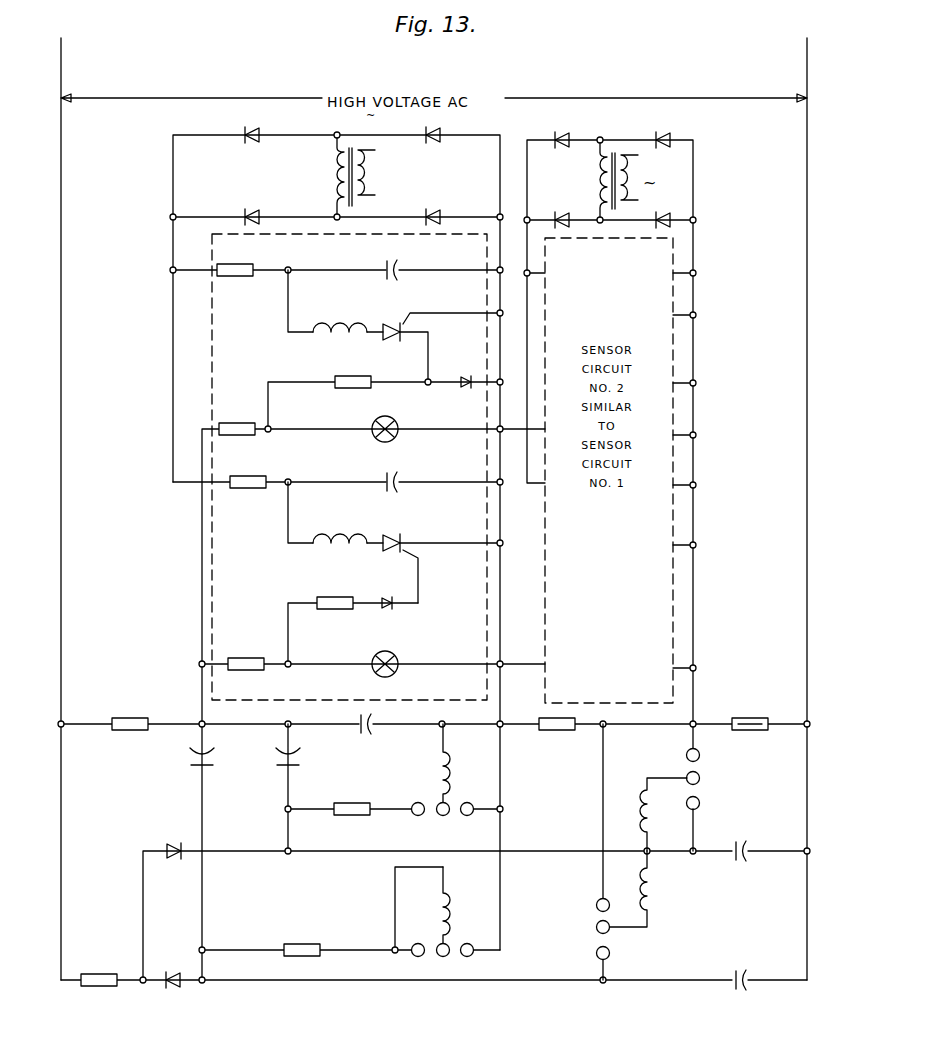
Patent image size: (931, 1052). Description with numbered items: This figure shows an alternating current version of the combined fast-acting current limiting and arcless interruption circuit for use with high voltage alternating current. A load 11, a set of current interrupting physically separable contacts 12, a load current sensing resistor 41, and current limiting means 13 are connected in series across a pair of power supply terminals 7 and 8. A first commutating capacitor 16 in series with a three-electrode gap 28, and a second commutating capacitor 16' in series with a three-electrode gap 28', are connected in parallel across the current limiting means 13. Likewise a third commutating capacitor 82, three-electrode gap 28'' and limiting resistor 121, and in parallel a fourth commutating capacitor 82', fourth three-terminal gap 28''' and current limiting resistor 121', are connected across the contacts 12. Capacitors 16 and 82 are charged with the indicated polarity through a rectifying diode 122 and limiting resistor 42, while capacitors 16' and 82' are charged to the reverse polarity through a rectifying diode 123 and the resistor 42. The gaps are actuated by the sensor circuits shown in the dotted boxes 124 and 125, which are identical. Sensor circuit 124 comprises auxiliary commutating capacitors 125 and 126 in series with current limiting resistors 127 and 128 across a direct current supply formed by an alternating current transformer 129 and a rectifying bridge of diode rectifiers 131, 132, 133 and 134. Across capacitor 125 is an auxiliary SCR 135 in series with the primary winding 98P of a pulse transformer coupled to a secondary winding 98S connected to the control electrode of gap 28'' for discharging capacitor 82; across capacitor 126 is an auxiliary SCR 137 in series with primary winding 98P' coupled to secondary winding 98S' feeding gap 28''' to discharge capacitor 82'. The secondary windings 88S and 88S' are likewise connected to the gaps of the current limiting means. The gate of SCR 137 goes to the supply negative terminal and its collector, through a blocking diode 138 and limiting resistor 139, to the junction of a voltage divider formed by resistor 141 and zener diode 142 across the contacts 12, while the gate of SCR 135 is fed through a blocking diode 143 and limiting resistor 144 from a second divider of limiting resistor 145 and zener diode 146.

The power supply terminal 7 is at (61, 135).
The power supply terminal 8 is at (807, 142).
The load 11 is at (128, 718).
The set of current interrupting physically separable contacts 12 is at (372, 720).
The current limiting means 13 is at (749, 718).
The first commutating capacitor 16 is at (752, 847).
The second commutating capacitor 16' is at (730, 985).
The three-electrode gap 28 is at (707, 800).
The three-electrode gap 28' is at (619, 852).
The three-electrode gap 28'' is at (451, 824).
The fourth three-terminal gap 28''' is at (461, 962).
The load current sensing resistor 41 is at (562, 729).
The limiting resistor 42 is at (102, 986).
The third commutating capacitor 82 is at (295, 787).
The fourth commutating capacitor 82' is at (212, 765).
The secondary winding 88S is at (663, 814).
The secondary winding 88S' is at (651, 889).
The primary winding of pulse transformer 98P is at (340, 523).
The primary winding 98P' is at (340, 312).
The secondary winding 98S is at (463, 763).
The secondary winding 98S' is at (465, 905).
The limiting resistor 121 is at (352, 796).
The current limiting resistor 121' is at (303, 931).
The rectifying diode 122 is at (175, 844).
The rectifying diode 123 is at (174, 989).
The sensor circuit 124 is at (212, 356).
The sensor circuit / auxiliary commutating capacitor 125 is at (403, 489).
The auxiliary commutating capacitor 126 is at (402, 277).
The current limiting resistor 127 is at (250, 490).
The current limiting resistor 128 is at (237, 282).
The alternating current transformer 129 is at (340, 148).
The diode rectifier 131 is at (256, 133).
The diode rectifier 132 is at (255, 210).
The diode rectifier 133 is at (440, 133).
The diode rectifier 134 is at (437, 210).
The auxiliary SCR 135 is at (403, 534).
The auxiliary SCR 137 is at (388, 340).
The blocking diode 138 is at (466, 375).
The limiting resistor 139 is at (350, 388).
The resistor 141 is at (232, 425).
The zener diode 142 is at (397, 424).
The blocking diode 143 is at (388, 598).
The limiting resistor 144 is at (323, 597).
The limiting resistor 145 is at (247, 658).
The zener diode 146 is at (397, 660).